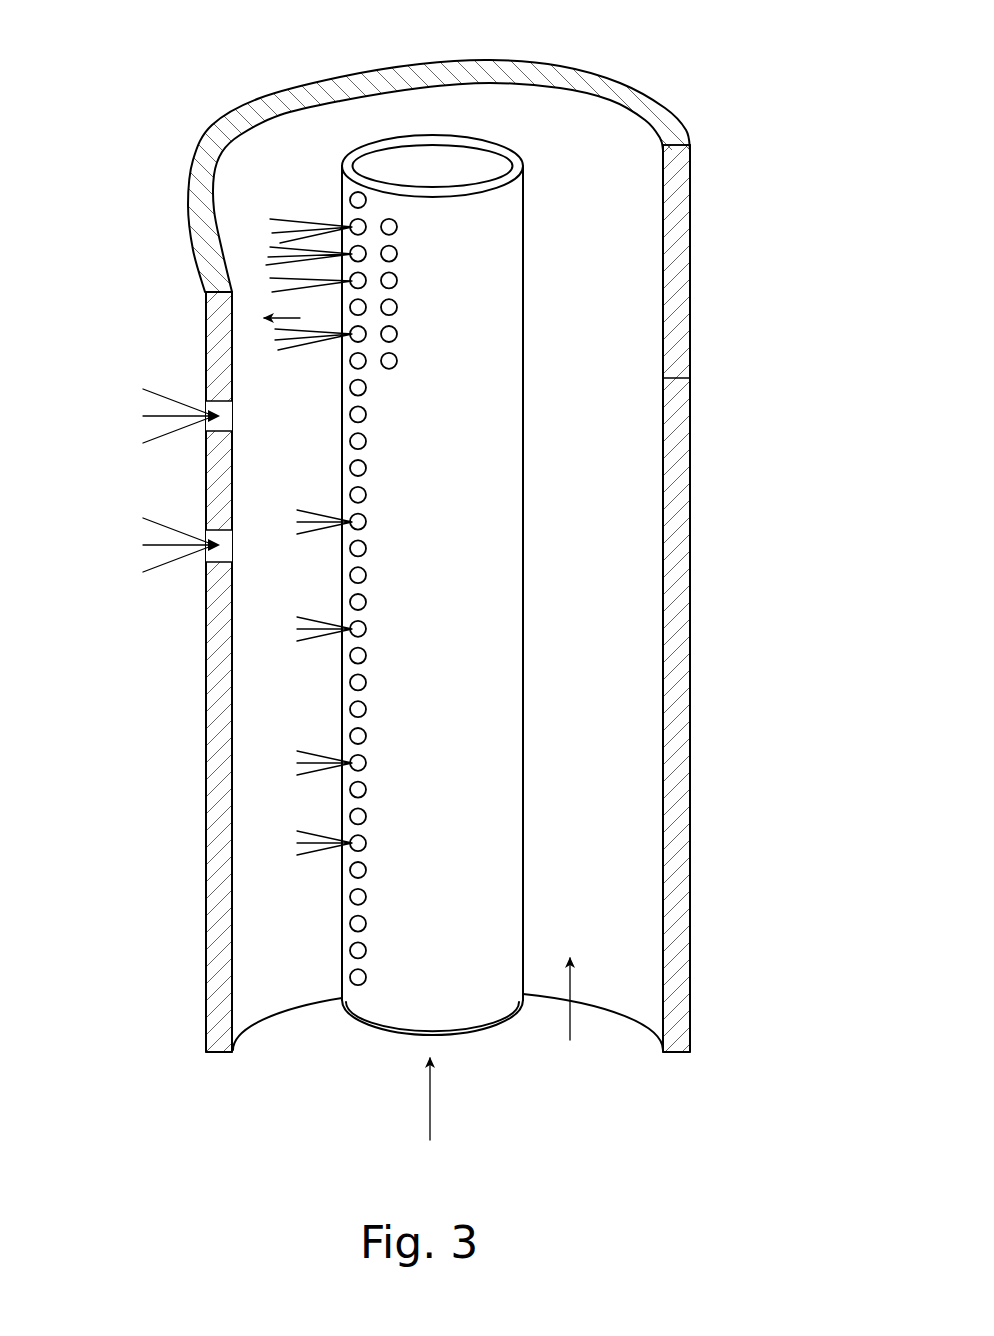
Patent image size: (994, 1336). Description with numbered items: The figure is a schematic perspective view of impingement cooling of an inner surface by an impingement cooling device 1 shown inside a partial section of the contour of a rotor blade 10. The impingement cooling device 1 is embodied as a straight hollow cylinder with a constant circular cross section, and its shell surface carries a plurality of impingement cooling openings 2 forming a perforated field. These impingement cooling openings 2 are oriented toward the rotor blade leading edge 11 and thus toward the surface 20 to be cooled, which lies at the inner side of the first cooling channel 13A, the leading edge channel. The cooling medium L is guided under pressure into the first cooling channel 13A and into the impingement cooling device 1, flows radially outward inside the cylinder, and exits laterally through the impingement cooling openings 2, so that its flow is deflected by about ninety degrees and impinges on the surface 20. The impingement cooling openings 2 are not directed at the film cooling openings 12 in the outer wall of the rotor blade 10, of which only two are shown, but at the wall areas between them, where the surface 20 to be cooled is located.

The impingement cooling device 1 is at (524, 660).
The impingement cooling openings 2 is at (390, 228).
The rotor blade 10 is at (438, 528).
The rotor blade leading edge 11 is at (187, 137).
The film cooling openings 12 is at (205, 425).
The first cooling channel 13A is at (575, 1015).
The surface to be cooled 20 is at (384, 543).
The cooling medium L is at (348, 741).